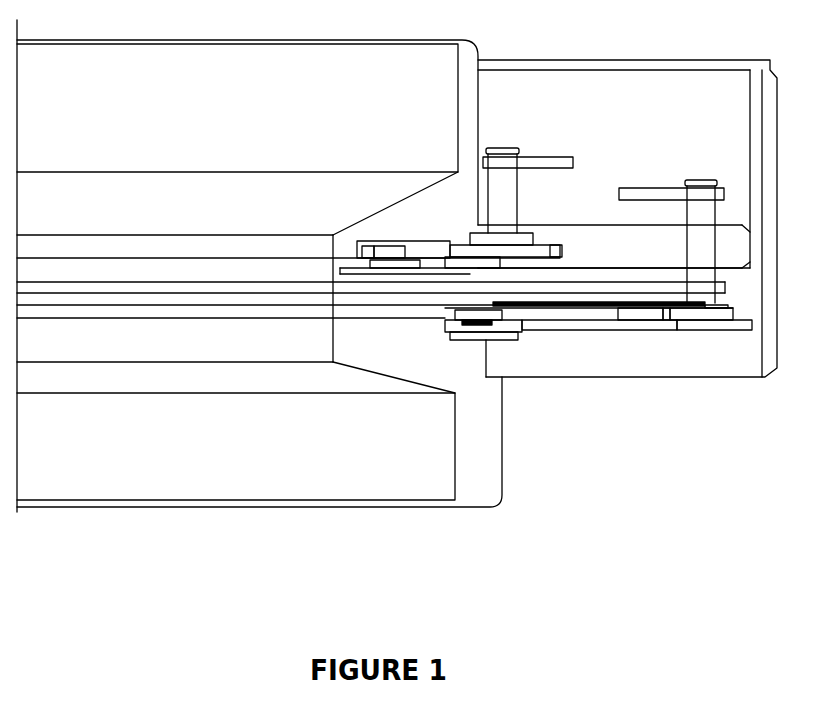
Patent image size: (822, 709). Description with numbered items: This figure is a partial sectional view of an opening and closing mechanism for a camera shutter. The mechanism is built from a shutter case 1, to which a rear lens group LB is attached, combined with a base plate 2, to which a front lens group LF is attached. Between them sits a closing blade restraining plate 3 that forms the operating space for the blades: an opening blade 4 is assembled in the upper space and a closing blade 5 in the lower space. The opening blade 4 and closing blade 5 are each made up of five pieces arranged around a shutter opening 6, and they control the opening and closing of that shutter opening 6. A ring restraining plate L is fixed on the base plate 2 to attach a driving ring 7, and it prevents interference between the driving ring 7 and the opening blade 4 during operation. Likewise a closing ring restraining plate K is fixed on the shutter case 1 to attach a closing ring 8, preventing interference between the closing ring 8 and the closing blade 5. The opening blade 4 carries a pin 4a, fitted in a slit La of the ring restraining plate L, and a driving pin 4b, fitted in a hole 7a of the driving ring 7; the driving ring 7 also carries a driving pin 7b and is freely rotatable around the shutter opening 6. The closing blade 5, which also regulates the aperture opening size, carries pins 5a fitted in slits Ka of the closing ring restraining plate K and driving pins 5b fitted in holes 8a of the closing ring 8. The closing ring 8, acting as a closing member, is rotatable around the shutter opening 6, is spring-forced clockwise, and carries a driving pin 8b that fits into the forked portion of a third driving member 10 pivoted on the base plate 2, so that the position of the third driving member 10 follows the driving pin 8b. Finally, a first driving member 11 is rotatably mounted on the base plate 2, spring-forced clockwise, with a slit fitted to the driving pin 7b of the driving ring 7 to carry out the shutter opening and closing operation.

The shutter case 1 is at (423, 358).
The base plate 2 is at (461, 210).
The closing blade restraining plate 3 is at (353, 290).
The opening blade 4 is at (350, 270).
The pin 4a is at (473, 261).
The driving pin 4b is at (383, 250).
The closing blade 5 is at (356, 306).
The pin 5a is at (640, 313).
The driving pin 5b is at (473, 312).
The shutter opening 6 is at (371, 313).
The driving ring 7 is at (362, 184).
The hole 7a is at (345, 258).
The driving pin 7b is at (503, 200).
The closing ring 8 is at (553, 322).
The hole 8a is at (497, 333).
The driving pin 8b is at (703, 217).
The third driving member 10 is at (655, 195).
The first driving member 11 is at (538, 160).
The closing ring restraining plate K is at (597, 313).
The slit Ka is at (618, 313).
The ring restraining plate L is at (567, 265).
The slit La is at (502, 261).
The front lens group LF is at (236, 122).
The rear lens group LB is at (240, 469).